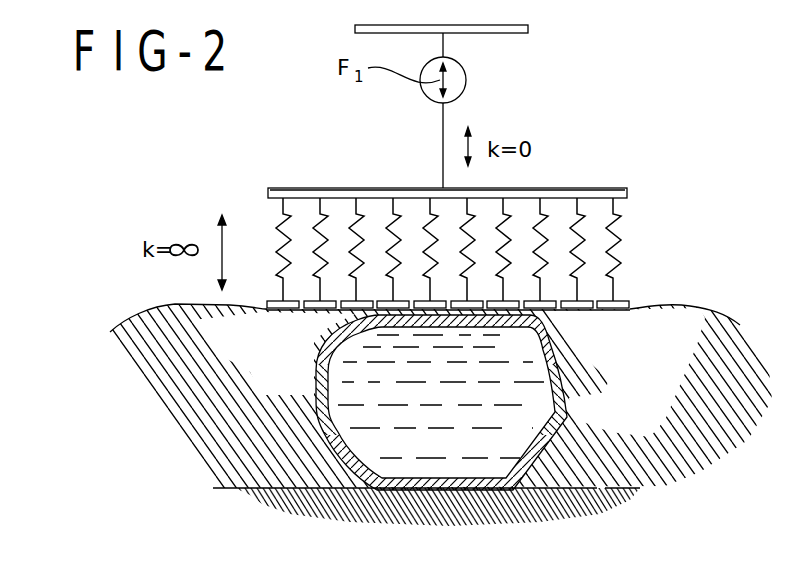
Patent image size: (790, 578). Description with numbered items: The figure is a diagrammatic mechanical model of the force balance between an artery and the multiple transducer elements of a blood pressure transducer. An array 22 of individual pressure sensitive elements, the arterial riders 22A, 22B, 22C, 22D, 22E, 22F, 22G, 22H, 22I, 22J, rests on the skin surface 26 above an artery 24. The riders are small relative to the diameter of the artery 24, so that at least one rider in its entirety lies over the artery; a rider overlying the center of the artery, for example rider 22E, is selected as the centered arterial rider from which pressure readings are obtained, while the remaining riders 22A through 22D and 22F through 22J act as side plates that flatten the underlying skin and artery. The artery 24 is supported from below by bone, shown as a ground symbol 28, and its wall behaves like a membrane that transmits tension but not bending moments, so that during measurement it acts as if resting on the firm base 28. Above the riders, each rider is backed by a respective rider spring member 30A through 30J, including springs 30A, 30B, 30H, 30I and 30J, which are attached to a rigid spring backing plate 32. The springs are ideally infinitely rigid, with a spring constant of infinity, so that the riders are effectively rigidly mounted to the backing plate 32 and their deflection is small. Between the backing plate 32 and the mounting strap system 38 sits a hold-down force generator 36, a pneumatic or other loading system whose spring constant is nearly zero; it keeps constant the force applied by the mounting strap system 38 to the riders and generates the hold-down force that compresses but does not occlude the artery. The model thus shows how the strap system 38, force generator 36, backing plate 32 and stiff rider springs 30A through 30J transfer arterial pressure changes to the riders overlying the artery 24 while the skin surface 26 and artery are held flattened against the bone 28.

The array of pressure sensitive elements 22 is at (447, 261).
The arterial rider 22A is at (270, 310).
The arterial rider 22B is at (308, 311).
The arterial rider 22C is at (345, 311).
The arterial rider 22D is at (382, 300).
The arterial rider 22E is at (422, 300).
The arterial rider 22F is at (480, 300).
The arterial rider 22G is at (516, 300).
The arterial rider 22H is at (557, 311).
The arterial rider 22I is at (583, 312).
The arterial rider 22J is at (623, 310).
The artery 24 is at (565, 418).
The skin surface 26 is at (135, 322).
The bone 28 is at (300, 488).
The rider spring member 30A is at (281, 253).
The rider spring member 30B is at (321, 227).
The rider spring member 30H is at (543, 230).
The rider spring member 30I is at (580, 248).
The rider spring member 30J is at (615, 257).
The spring backing plate 32 is at (627, 192).
The hold-down force generator 36 is at (466, 82).
The mounting strap system 38 is at (528, 28).